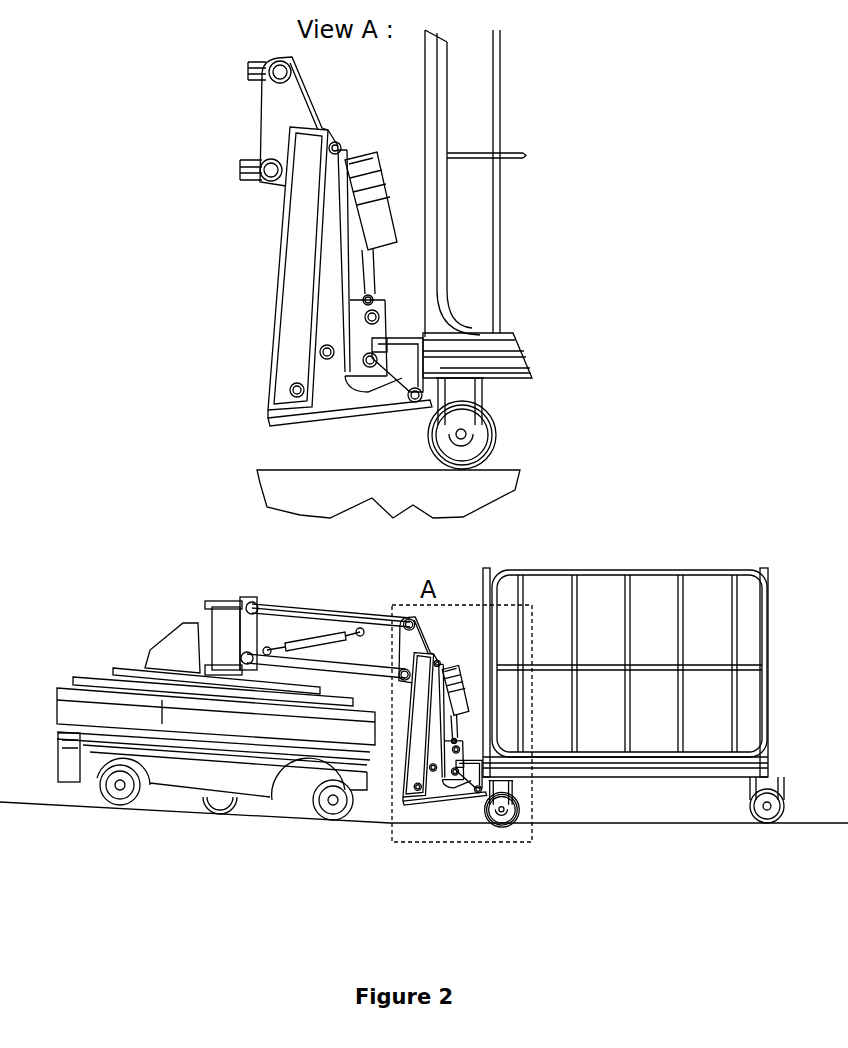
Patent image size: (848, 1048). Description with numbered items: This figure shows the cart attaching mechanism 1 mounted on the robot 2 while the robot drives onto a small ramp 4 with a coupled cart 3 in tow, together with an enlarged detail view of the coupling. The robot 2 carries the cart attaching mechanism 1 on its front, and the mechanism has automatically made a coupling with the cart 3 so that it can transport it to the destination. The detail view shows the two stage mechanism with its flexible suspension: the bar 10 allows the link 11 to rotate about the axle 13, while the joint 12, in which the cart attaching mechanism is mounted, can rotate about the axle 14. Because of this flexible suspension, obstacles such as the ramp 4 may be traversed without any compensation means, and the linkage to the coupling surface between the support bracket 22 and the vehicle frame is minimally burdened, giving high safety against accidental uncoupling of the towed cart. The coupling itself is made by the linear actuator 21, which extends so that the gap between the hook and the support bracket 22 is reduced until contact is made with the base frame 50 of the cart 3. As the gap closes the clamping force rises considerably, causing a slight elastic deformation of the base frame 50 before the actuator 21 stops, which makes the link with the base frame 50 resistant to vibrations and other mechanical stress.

The cart attaching mechanism 1 is at (187, 642).
The robot 2 is at (98, 685).
The cart 3 is at (553, 570).
The ramp 4 is at (258, 815).
The bar 10 is at (318, 259).
The link 11 is at (363, 403).
The joint 12 is at (266, 268).
The axle 13 is at (290, 386).
The axle 14 is at (405, 397).
The linear actuator 21 is at (376, 180).
The support bracket 22 is at (389, 368).
The base frame 50 is at (533, 360).